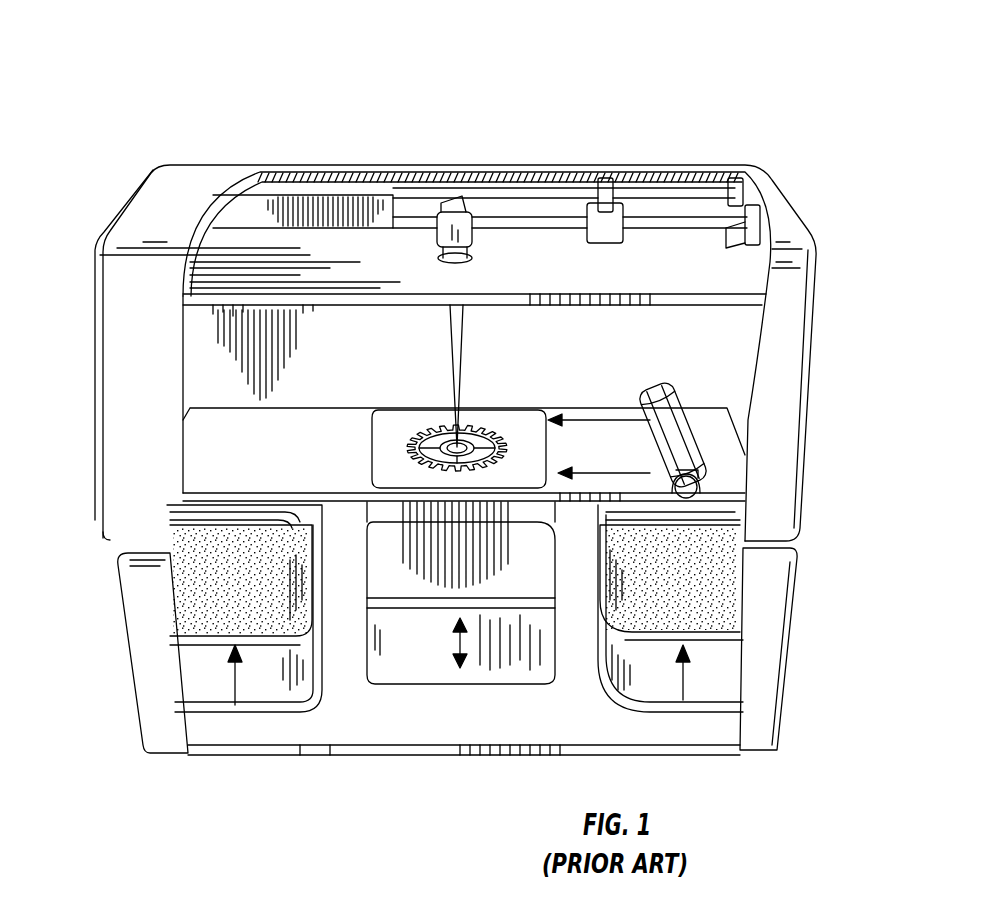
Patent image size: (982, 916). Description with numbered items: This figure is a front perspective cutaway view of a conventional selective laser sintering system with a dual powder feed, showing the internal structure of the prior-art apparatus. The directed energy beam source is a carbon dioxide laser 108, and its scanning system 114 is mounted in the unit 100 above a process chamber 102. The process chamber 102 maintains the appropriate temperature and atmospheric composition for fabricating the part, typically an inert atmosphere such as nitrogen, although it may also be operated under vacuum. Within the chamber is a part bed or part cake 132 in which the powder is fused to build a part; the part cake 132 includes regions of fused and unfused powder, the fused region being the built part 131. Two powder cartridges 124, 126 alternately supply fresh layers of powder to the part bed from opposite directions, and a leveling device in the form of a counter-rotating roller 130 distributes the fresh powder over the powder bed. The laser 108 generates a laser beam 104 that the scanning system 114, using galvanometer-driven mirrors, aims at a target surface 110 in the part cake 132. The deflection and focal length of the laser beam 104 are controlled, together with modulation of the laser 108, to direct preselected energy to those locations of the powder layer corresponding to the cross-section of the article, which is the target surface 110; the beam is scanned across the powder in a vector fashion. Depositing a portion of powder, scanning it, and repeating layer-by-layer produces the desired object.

The unit 100 is at (800, 142).
The process chamber 102 is at (293, 372).
The laser beam 104 is at (468, 320).
The carbon dioxide laser 108 is at (337, 208).
The target surface 110 is at (485, 430).
The scanning system 114 is at (448, 214).
The powder cartridge 124 is at (207, 637).
The powder cartridge 126 is at (723, 633).
The counter-rotating roller 130 is at (700, 437).
The built part 131 is at (447, 585).
The part cake 132 is at (392, 420).